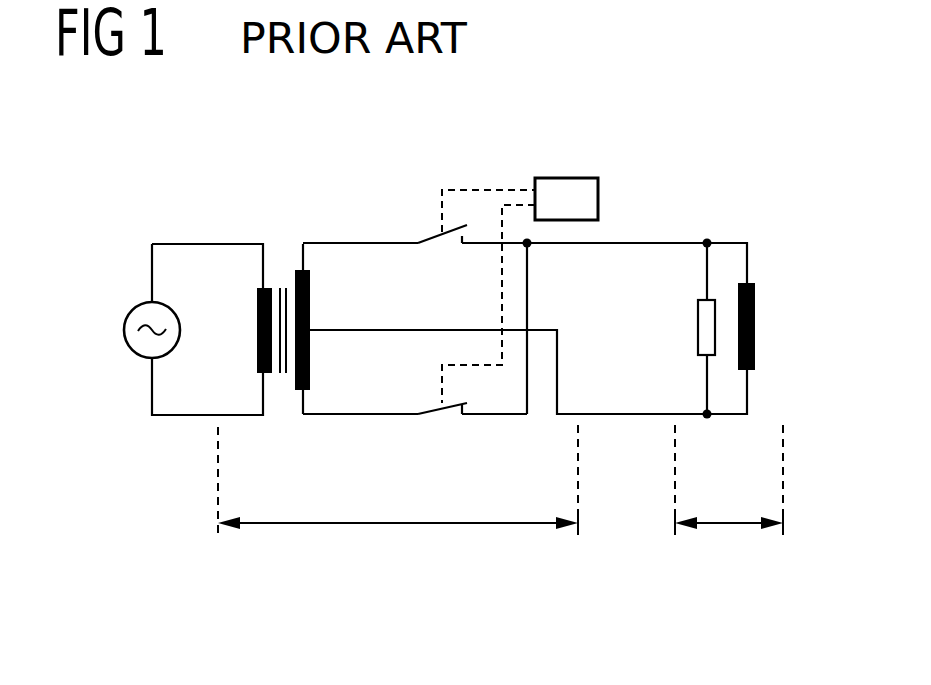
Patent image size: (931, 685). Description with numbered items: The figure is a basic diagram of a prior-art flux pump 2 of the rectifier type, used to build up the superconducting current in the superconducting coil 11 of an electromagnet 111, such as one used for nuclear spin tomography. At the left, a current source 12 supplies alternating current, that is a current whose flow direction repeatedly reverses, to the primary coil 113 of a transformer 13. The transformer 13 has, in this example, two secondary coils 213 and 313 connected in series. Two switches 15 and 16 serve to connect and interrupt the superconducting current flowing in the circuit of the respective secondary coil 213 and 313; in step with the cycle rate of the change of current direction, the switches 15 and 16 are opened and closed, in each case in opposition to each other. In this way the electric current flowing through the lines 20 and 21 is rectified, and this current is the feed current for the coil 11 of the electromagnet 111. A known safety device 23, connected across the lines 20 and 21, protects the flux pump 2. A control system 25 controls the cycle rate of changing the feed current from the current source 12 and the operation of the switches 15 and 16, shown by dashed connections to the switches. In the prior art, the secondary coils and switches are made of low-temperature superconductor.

The current source 12 is at (124, 330).
The transformer 13 is at (288, 377).
The primary coil 113 is at (257, 300).
The secondary coil 213 is at (311, 292).
The secondary coil 313 is at (290, 390).
The switch 15 is at (453, 237).
The switch 16 is at (450, 414).
The control system 25 is at (566, 178).
The line 20 is at (662, 241).
The line 21 is at (620, 415).
The safety device 23 is at (697, 330).
The superconducting coil 11 is at (756, 322).
The flux pump 2 is at (398, 481).
The electromagnet 111 is at (729, 480).